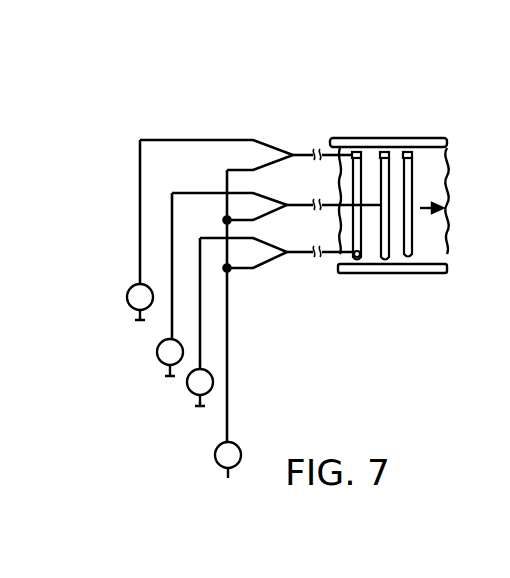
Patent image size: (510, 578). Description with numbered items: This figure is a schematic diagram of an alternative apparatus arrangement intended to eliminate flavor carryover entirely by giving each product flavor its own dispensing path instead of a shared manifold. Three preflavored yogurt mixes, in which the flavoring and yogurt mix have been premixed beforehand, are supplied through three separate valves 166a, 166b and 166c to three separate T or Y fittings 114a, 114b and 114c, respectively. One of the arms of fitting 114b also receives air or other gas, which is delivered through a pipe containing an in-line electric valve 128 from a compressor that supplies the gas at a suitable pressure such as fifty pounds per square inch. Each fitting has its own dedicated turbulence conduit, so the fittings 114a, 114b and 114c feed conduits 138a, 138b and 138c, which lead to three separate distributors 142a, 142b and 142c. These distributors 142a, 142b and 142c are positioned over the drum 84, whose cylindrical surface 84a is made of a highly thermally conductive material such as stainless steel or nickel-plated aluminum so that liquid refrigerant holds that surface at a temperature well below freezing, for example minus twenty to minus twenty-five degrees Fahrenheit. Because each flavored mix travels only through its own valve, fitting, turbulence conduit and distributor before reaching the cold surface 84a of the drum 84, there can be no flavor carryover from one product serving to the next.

The T or Y fitting 114a is at (264, 133).
The T or Y fitting 114b is at (244, 183).
The T or Y fitting 114c is at (272, 270).
The turbulence conduit 138a is at (300, 150).
The turbulence conduit 138b is at (292, 204).
The turbulence conduit 138c is at (300, 255).
The drum 84 is at (370, 138).
The cylindrical surface 84a is at (430, 262).
The distributor 142a is at (413, 170).
The distributor 142b is at (392, 268).
The distributor 142c is at (360, 250).
The valve 166a is at (128, 294).
The valve 166b is at (158, 362).
The valve 166c is at (213, 385).
The in-line electric valve 128 is at (238, 443).